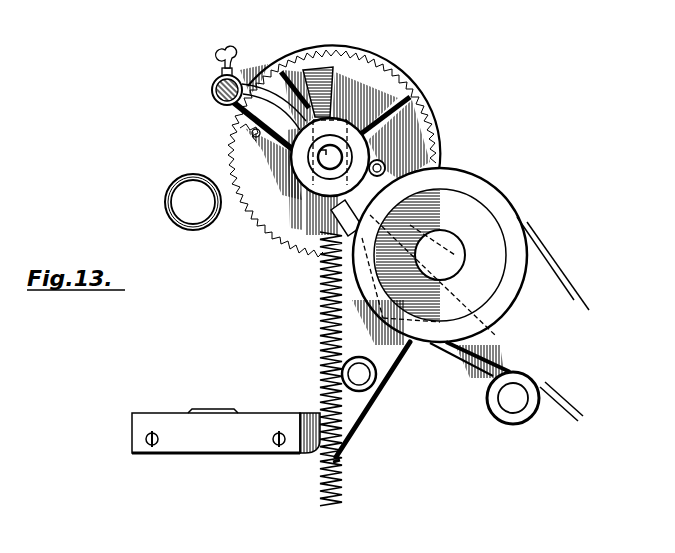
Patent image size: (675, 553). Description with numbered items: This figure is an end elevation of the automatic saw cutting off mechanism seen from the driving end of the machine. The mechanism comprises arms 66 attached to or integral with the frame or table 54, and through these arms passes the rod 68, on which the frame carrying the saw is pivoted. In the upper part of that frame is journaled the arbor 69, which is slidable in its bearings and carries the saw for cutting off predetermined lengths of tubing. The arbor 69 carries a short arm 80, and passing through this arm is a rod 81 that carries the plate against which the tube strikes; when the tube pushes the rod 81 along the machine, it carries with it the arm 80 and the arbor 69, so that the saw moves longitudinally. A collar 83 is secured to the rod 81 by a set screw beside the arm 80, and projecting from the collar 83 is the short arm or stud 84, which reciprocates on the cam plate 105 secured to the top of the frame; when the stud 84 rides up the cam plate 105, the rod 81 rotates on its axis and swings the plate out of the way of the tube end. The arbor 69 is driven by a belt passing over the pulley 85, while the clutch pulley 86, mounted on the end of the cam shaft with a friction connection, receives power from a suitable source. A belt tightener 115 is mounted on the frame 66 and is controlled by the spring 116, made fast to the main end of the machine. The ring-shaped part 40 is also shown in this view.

The ring 40 is at (208, 223).
The frame or table 54 is at (249, 417).
The arms 66 is at (362, 402).
The rod 68 is at (362, 375).
The arbor 69 is at (322, 165).
The short arm 80 is at (240, 133).
The rod 81 is at (212, 93).
The collar 83 is at (236, 106).
The short arm or stud 84 is at (272, 80).
The pulley 85 is at (358, 146).
The clutch pulley 86 is at (483, 192).
The cam plate 105 is at (337, 68).
The belt tightener 115 is at (512, 400).
The spring 116 is at (320, 292).